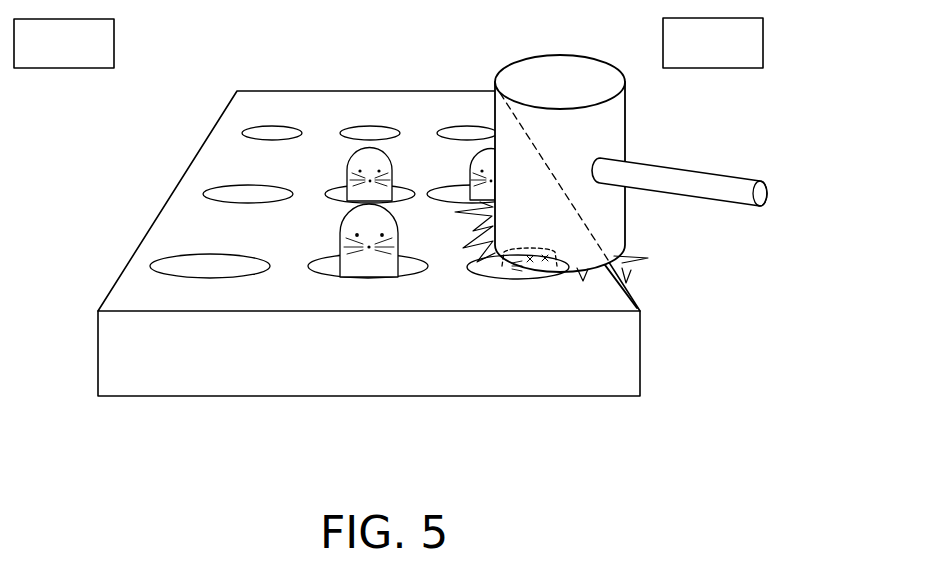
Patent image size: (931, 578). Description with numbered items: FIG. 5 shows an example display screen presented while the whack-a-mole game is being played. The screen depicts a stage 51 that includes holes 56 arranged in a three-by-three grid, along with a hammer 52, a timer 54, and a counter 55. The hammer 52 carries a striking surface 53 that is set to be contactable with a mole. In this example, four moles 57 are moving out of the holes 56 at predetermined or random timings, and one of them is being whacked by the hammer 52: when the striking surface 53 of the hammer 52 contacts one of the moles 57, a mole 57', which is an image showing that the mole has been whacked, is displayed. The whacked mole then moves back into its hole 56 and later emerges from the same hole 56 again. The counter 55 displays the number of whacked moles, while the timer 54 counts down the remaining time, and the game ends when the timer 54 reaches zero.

The stage 51 is at (623, 365).
The hammer 52 is at (612, 103).
The striking surface 53 is at (570, 67).
The timer 54 is at (115, 39).
The counter 55 is at (764, 42).
The holes 56 is at (160, 266).
The moles 57 is at (404, 213).
The mole 57' is at (547, 255).